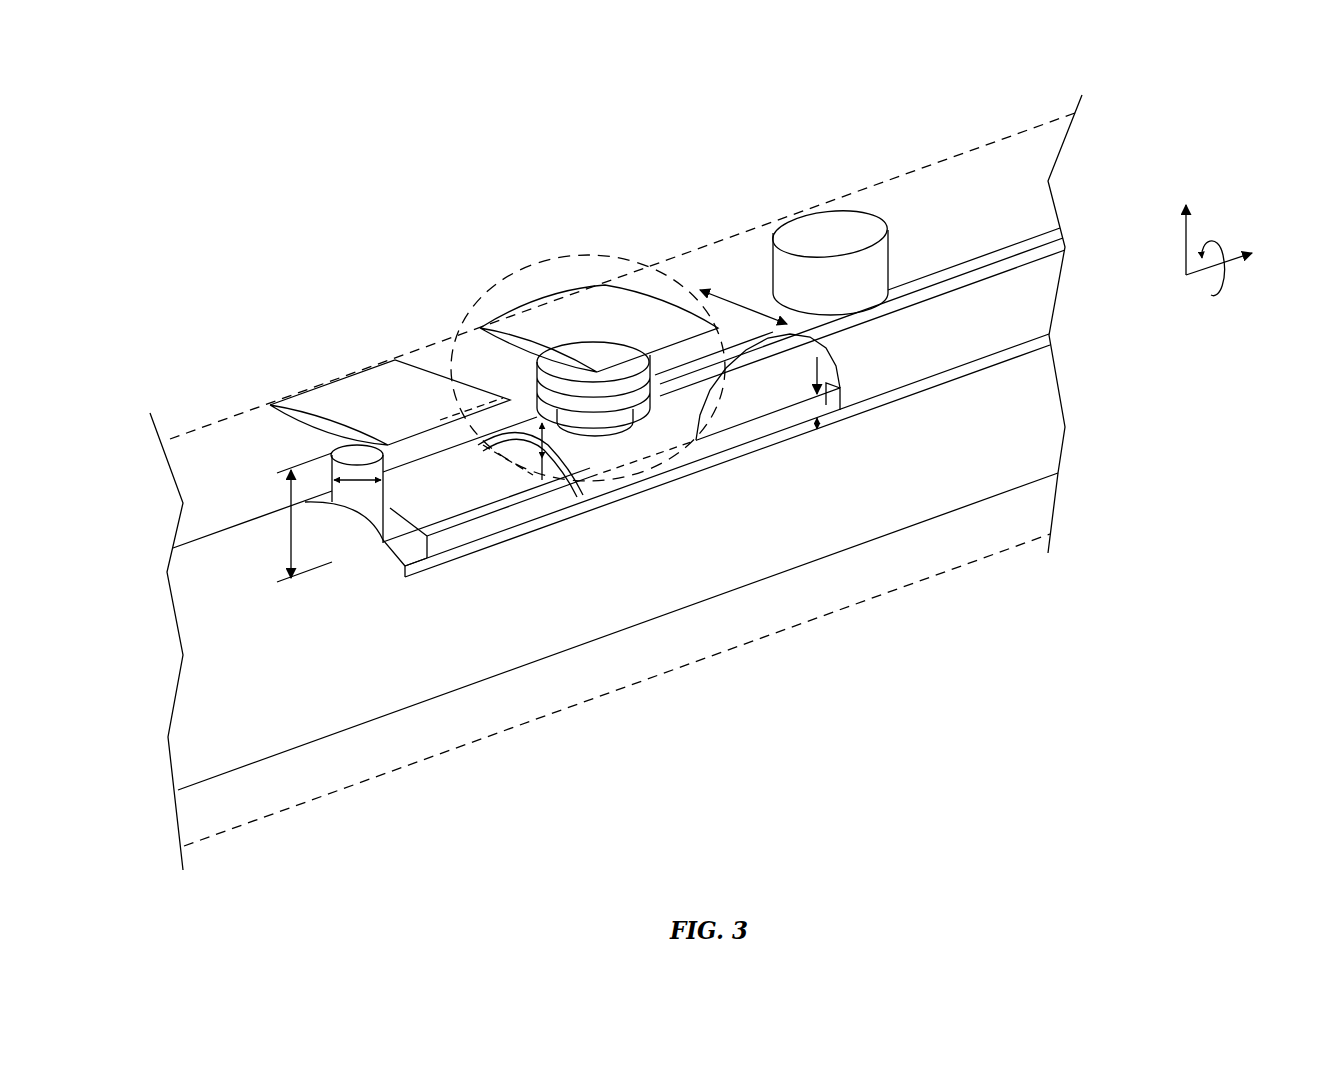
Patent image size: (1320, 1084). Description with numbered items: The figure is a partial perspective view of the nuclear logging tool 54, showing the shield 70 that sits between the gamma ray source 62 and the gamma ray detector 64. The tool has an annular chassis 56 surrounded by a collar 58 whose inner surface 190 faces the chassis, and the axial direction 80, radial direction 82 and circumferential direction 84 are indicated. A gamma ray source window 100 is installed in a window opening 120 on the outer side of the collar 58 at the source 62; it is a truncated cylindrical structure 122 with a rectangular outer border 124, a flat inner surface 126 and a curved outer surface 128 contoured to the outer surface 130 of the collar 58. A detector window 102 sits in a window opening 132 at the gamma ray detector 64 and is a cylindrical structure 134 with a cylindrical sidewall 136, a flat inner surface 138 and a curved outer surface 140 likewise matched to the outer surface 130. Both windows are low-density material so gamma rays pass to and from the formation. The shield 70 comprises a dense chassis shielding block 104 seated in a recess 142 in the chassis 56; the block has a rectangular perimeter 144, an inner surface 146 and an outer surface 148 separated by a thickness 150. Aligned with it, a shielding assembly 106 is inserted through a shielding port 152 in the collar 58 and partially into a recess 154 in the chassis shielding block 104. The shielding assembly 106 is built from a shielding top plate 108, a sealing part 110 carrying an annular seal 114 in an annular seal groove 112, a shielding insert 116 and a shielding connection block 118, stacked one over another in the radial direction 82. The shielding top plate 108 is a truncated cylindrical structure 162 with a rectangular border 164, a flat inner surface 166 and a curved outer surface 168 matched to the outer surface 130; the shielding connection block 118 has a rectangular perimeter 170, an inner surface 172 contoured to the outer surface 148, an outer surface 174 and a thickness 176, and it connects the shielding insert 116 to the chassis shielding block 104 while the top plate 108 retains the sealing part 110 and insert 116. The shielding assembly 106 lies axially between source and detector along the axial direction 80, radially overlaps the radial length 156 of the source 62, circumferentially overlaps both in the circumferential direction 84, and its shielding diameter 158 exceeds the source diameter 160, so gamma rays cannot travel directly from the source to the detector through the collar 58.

The nuclear logging tool 54 is at (986, 92).
The chassis 56 is at (198, 683).
The collar 58 is at (205, 498).
The gamma ray source 62 is at (330, 448).
The gamma ray detector 64 is at (1048, 292).
The shield 70 is at (225, 193).
The axial direction 80 is at (1232, 262).
The radial direction 82 is at (1185, 243).
The circumferential direction 84 is at (1203, 246).
The gamma ray source window 100 is at (345, 372).
The detector window 102 is at (795, 240).
The chassis shielding block 104 is at (505, 508).
The shielding assembly 106 is at (583, 255).
The shielding top plate 108 is at (645, 283).
The sealing part 110 is at (679, 350).
The annular seal groove 112 is at (713, 343).
The annular seal 114 is at (750, 343).
The shielding insert 116 is at (653, 357).
The shielding connection block 118 is at (645, 383).
The window recess or opening 120 is at (400, 362).
The truncated cylindrical structure 122 is at (330, 390).
The rectangular outer perimeter or border 124 is at (273, 403).
The flat or planar inner surface 126 is at (262, 428).
The curved outer surface 128 is at (300, 412).
The outer surface 130 is at (986, 160).
The window recess or opening 132 is at (845, 217).
The cylindrical structure 134 is at (784, 235).
The cylindrical sidewall 136 is at (889, 266).
The flat or planar inner surface 138 is at (810, 320).
The curved outer surface 140 is at (823, 218).
The recess 142 is at (447, 556).
The rectangular perimeter 144 is at (868, 400).
The inner surface 146 is at (843, 408).
The outer surface 148 is at (817, 357).
The thickness 150 is at (818, 437).
The shielding port 152 is at (530, 368).
The recess 154 is at (589, 450).
The radial length 156 is at (291, 525).
The shielding width or diameter 158 is at (746, 306).
The source width or diameter 160 is at (358, 482).
The truncated cylindrical structure 162 is at (570, 303).
The rectangular outer perimeter or border 164 is at (537, 308).
The flat or planar inner surface 166 is at (478, 330).
The curved outer surface 168 is at (502, 318).
The rectangular perimeter 170 is at (606, 440).
The inner surface 172 is at (530, 470).
The outer surface 174 is at (636, 414).
The thickness 176 is at (561, 463).
The inner surface 190 is at (413, 467).